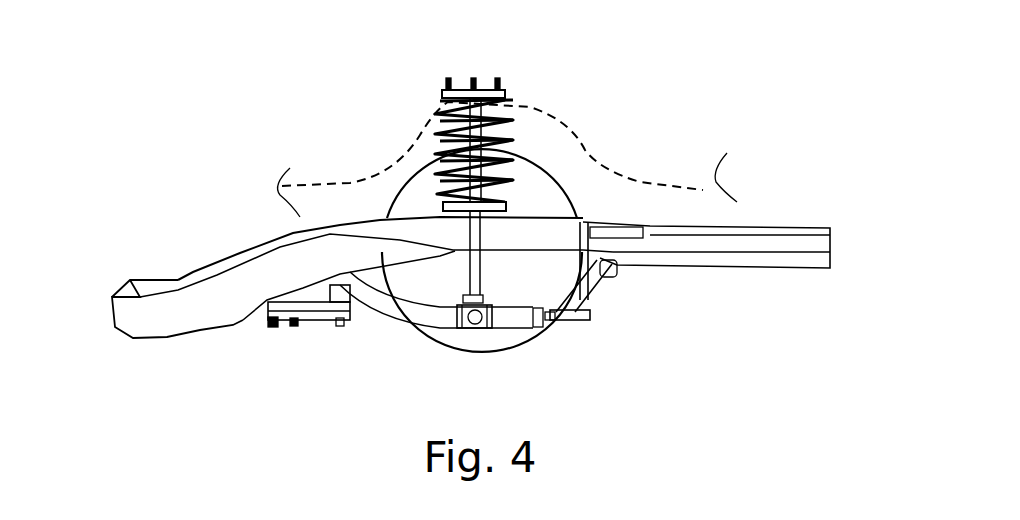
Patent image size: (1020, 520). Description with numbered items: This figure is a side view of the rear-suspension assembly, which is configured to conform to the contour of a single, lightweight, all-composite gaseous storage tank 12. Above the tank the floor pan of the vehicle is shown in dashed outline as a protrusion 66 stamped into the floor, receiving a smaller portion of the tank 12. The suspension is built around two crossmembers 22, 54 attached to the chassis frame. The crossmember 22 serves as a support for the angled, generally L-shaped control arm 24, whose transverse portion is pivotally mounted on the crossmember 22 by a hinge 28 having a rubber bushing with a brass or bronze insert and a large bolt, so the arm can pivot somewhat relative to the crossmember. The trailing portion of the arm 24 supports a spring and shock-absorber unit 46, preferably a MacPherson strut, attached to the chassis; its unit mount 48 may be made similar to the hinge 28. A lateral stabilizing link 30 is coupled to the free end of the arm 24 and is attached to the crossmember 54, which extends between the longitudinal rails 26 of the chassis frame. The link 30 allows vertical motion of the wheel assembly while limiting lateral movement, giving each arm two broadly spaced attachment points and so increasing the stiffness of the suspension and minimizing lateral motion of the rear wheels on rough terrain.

The gaseous storage tank 12 is at (536, 190).
The crossmember 22 is at (268, 322).
The control arm 24 is at (415, 332).
The longitudinal rail 26 is at (114, 330).
The hinge 28 is at (340, 305).
The lateral stabilizing link 30 is at (600, 326).
The spring and shock-absorber unit 46 is at (518, 104).
The unit mount 48 is at (478, 340).
The crossmember 54 is at (624, 279).
The protrusion 66 is at (356, 184).